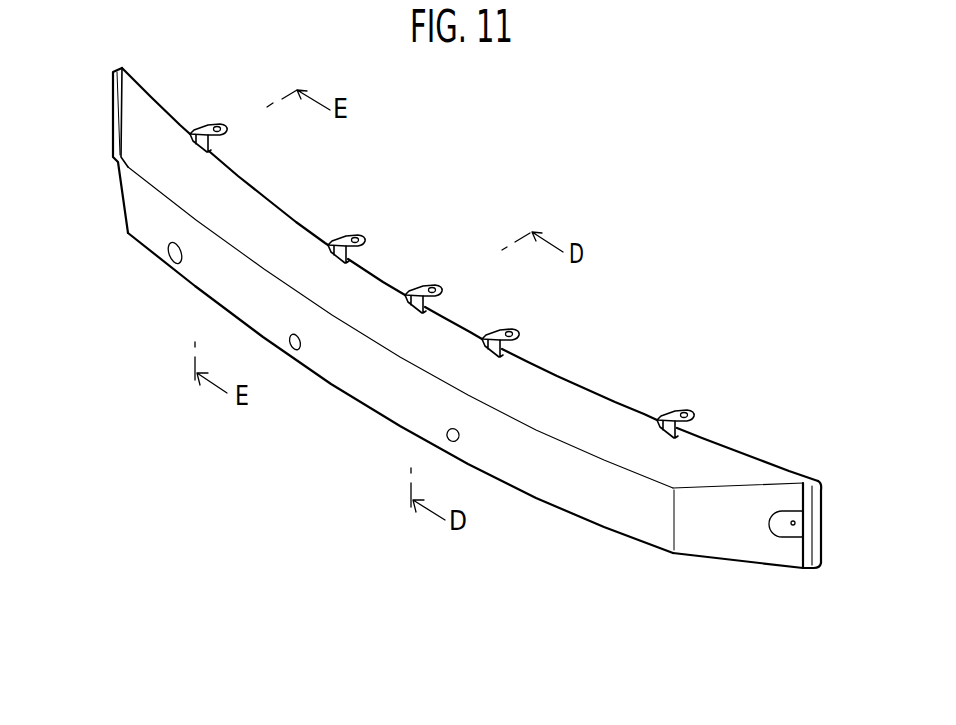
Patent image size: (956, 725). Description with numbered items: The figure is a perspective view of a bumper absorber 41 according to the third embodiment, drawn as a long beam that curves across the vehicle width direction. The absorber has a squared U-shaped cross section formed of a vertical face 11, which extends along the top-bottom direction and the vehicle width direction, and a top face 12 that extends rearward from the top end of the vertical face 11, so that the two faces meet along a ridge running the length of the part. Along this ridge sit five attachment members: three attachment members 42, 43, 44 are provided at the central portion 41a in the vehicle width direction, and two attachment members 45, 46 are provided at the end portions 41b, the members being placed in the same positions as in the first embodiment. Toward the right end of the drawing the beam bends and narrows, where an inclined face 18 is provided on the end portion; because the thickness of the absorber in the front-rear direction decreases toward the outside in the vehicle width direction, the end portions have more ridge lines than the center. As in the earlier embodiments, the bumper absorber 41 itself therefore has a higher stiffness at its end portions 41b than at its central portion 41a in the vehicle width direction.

The vertical face 11 is at (467, 348).
The top face 12 is at (573, 400).
The inclined face 18 is at (725, 548).
The bumper absorber 41 is at (467, 348).
The central portion 41a is at (350, 384).
The end portions 41b is at (650, 528).
The attachment member 42 is at (342, 238).
The attachment member 43 is at (423, 284).
The attachment member 44 is at (502, 328).
The attachment member 45 is at (204, 130).
The attachment member 46 is at (677, 409).